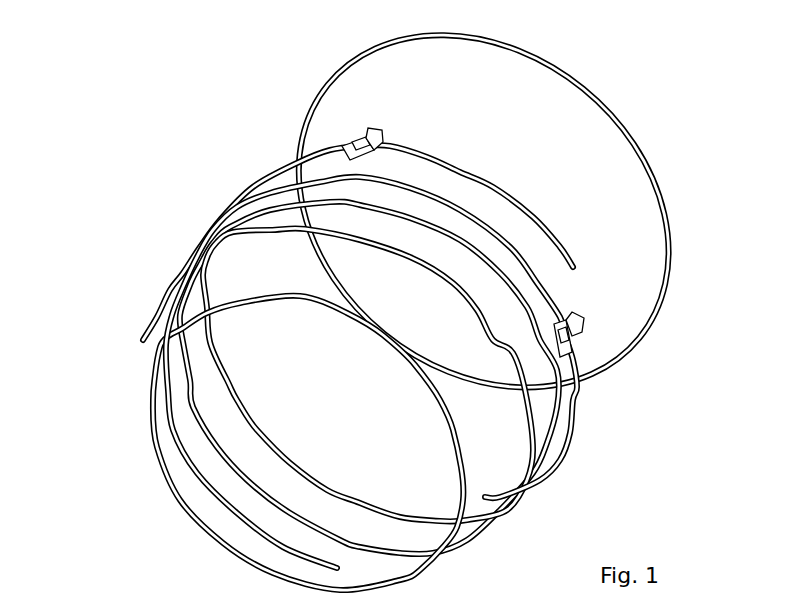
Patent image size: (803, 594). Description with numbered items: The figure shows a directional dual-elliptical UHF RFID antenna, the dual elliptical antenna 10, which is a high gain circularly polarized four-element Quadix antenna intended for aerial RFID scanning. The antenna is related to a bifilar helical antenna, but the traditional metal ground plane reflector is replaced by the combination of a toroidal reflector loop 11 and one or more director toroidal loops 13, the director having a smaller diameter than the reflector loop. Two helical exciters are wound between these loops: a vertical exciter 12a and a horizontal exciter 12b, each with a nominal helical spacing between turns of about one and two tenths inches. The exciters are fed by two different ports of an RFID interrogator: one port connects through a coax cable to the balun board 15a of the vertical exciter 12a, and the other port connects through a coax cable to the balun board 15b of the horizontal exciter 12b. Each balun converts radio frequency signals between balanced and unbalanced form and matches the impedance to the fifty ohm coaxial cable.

The dual elliptical antenna 10 is at (296, 58).
The toroidal reflector loop 11 is at (607, 113).
The vertical exciter 12a is at (577, 263).
The horizontal exciter 12b is at (582, 393).
The director toroidal loop 13 is at (160, 473).
The balun board 15a is at (350, 138).
The balun board 15b is at (582, 336).